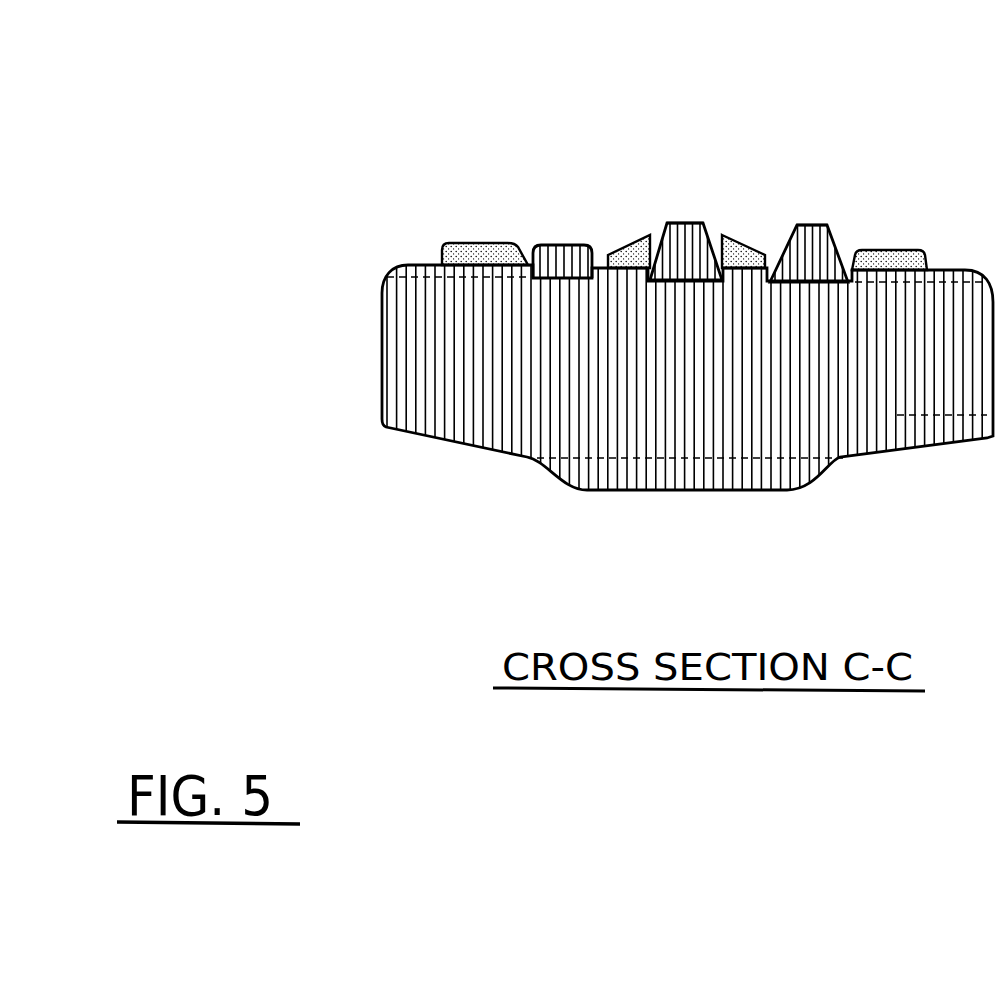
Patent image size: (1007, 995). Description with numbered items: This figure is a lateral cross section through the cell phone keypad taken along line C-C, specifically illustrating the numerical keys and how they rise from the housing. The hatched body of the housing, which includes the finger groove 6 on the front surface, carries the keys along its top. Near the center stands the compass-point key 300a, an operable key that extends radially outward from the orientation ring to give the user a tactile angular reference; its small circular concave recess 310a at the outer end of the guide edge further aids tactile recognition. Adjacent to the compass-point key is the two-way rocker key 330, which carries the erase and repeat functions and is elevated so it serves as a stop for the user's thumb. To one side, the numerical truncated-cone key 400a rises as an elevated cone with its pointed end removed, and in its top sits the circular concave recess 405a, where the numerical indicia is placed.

The finger groove 6 is at (526, 466).
The compass-point key 300a is at (660, 237).
The circular concave recess 310a is at (688, 222).
The two-way rocker key 330 is at (738, 235).
The numerical truncated-cone key 400a is at (837, 235).
The circular concave recess 405a is at (809, 222).